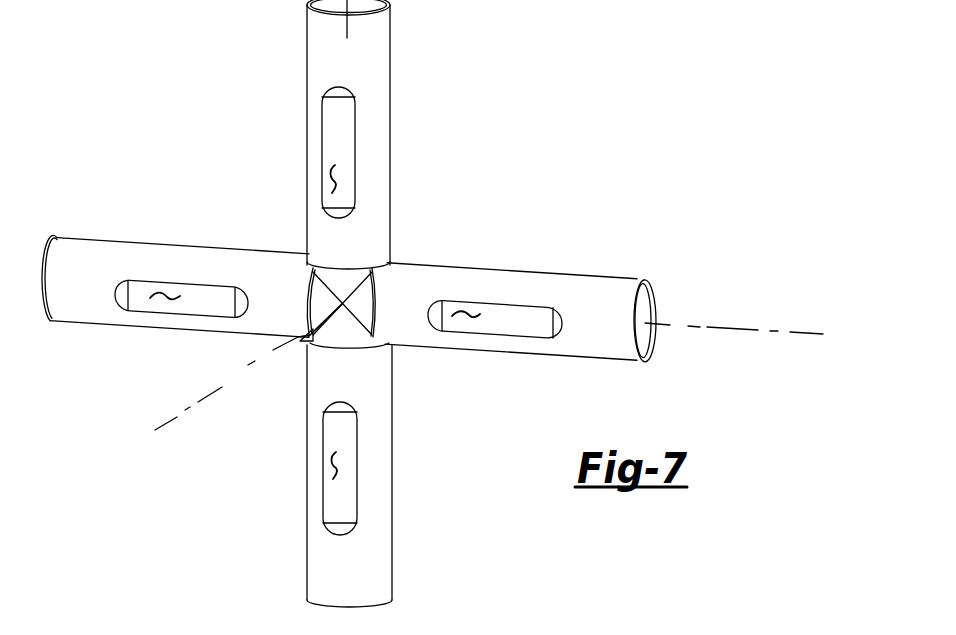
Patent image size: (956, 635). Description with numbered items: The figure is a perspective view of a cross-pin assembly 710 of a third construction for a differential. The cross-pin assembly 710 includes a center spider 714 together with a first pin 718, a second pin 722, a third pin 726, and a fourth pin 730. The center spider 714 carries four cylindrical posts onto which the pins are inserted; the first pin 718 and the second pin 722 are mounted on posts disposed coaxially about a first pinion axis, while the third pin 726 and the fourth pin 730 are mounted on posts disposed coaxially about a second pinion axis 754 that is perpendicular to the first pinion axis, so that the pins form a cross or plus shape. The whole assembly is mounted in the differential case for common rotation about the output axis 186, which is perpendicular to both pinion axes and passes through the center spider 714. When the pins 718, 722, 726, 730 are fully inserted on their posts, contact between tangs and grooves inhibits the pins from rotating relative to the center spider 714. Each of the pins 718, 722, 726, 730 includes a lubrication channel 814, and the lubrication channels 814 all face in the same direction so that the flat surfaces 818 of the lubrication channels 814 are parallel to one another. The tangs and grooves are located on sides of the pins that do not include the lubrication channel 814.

The cross-pin assembly 710 is at (166, 122).
The center spider 714 is at (333, 338).
The first pin 718 is at (391, 73).
The second pin 722 is at (310, 560).
The third pin 726 is at (107, 240).
The fourth pin 730 is at (590, 272).
The second pinion axis 754 is at (758, 337).
The output axis 186 is at (168, 422).
The lubrication channel 814 is at (336, 128).
The flat surface 818 is at (330, 172).